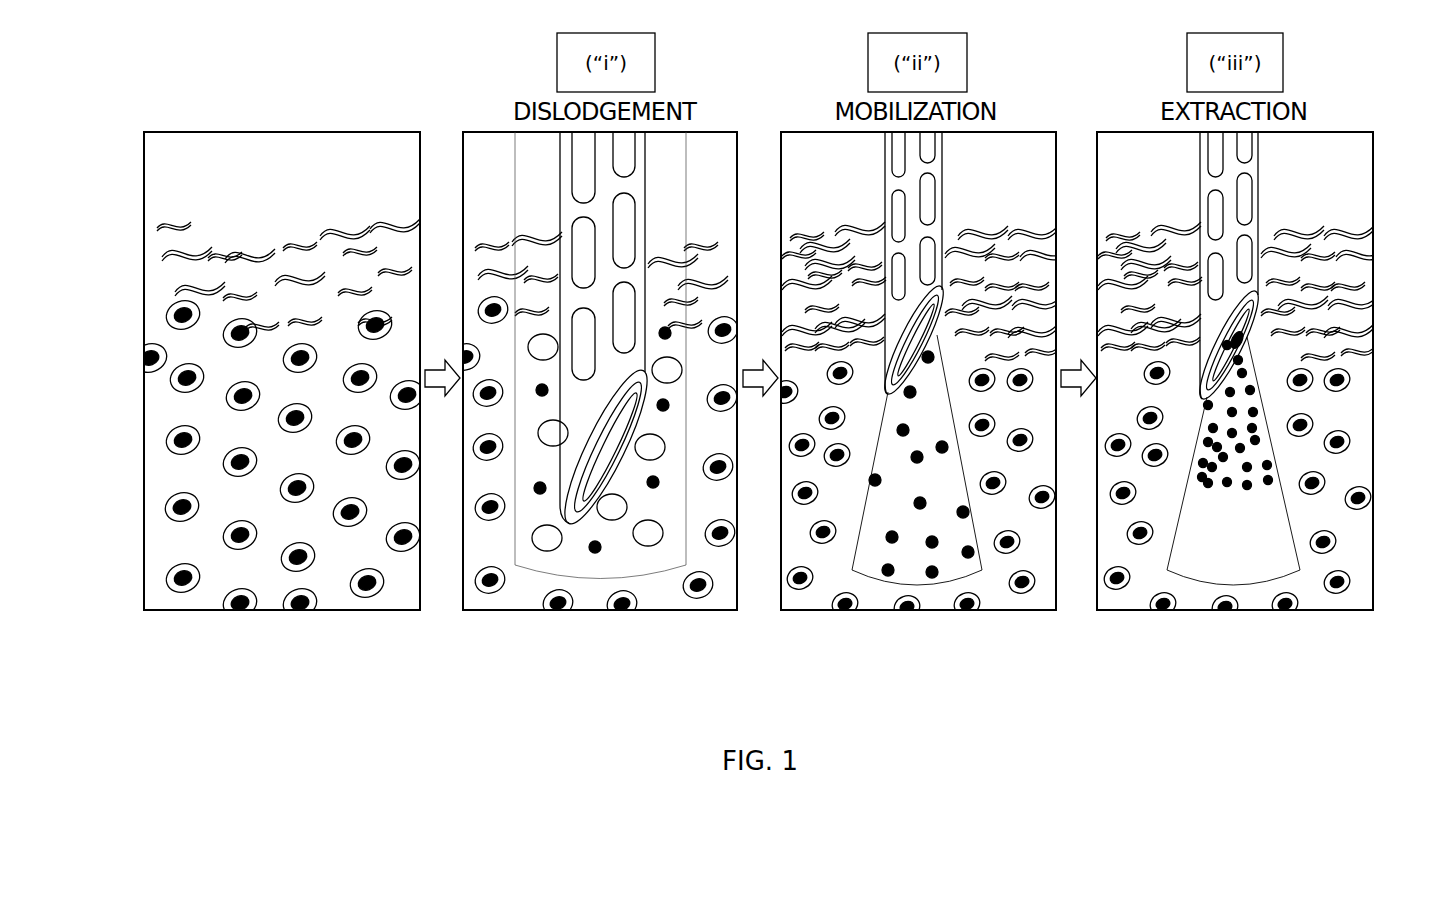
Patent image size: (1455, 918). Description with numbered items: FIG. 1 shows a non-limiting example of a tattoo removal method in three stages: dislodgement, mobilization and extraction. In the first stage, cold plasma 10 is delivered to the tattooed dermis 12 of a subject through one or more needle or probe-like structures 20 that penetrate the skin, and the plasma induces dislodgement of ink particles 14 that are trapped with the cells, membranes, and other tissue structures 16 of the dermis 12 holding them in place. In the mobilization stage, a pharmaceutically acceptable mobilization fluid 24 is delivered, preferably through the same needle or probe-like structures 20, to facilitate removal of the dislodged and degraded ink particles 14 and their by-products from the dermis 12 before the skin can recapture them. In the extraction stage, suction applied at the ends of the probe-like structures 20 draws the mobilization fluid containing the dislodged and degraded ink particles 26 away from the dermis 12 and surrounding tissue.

The cold plasma 10 is at (519, 205).
The dermis 12 is at (166, 555).
The ink particles 14 is at (178, 312).
The cells, membranes, and/or other tissue structures 16 is at (240, 538).
The needle or probe-like structures 20 is at (649, 216).
The mobilization fluid 24 is at (893, 585).
The dislodged and degraded ink particles 26 is at (1235, 415).